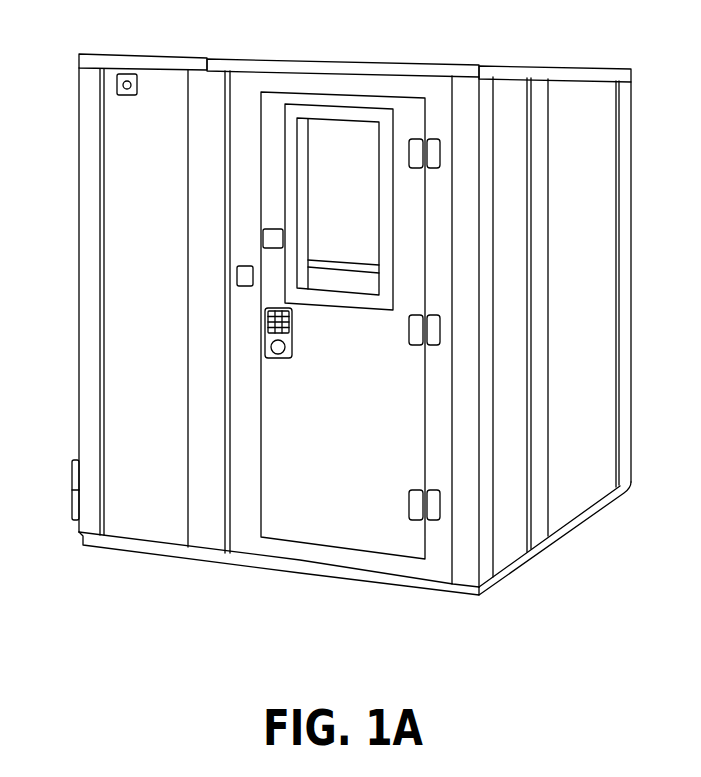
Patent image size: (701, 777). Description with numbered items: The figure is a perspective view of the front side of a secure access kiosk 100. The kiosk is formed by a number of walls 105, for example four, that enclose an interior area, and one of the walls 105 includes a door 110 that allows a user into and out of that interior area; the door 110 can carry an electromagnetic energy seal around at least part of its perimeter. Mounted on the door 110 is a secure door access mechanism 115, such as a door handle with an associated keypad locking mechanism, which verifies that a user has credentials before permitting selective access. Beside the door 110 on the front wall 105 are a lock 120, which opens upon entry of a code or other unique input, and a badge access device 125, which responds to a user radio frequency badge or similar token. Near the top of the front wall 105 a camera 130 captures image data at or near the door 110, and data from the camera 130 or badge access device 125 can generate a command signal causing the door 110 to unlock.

The secure access kiosk 100 is at (76, 150).
The wall 105 is at (598, 230).
The door 110 is at (323, 547).
The secure door access mechanism 115 is at (250, 328).
The lock 120 is at (263, 237).
The badge access device 125 is at (237, 277).
The camera 130 is at (117, 77).